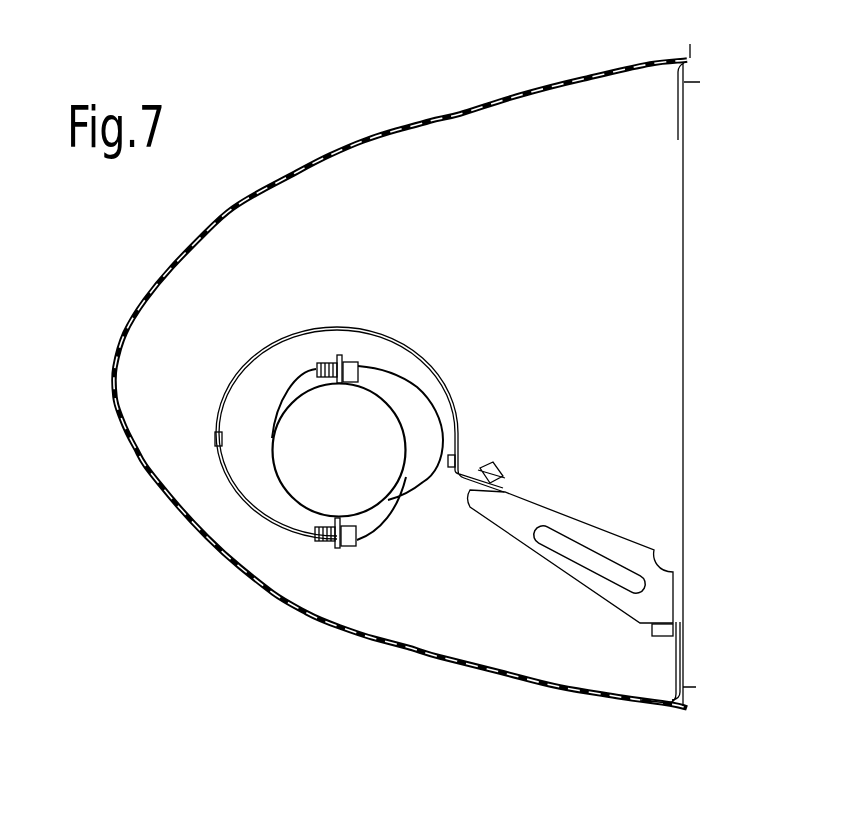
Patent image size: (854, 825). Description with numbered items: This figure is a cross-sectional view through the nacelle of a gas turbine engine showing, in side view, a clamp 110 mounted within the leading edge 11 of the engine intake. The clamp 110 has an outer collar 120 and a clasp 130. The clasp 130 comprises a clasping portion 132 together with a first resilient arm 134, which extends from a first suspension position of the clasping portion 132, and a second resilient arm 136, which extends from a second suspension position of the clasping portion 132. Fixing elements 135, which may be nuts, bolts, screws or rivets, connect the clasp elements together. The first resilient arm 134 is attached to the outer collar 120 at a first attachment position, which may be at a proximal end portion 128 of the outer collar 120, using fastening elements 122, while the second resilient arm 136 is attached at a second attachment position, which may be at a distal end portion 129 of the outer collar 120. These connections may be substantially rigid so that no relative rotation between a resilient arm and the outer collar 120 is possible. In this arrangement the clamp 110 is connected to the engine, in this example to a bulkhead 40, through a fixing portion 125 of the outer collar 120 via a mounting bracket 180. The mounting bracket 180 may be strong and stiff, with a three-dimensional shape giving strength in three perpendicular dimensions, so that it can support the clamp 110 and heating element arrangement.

The leading edge 11 is at (522, 93).
The bulkhead 40 is at (689, 233).
The clamp 110 is at (298, 328).
The outer collar 120 is at (440, 377).
The fastening elements 122 is at (215, 441).
The fixing portion 125 is at (502, 465).
The proximal end portion 128 is at (463, 436).
The distal end portion 129 is at (208, 413).
The clasp 130 is at (265, 392).
The clasping portion 132 is at (287, 500).
The first resilient arm 134 is at (396, 370).
The fixing elements 135 is at (346, 548).
The second resilient arm 136 is at (235, 487).
The mounting bracket 180 is at (633, 557).